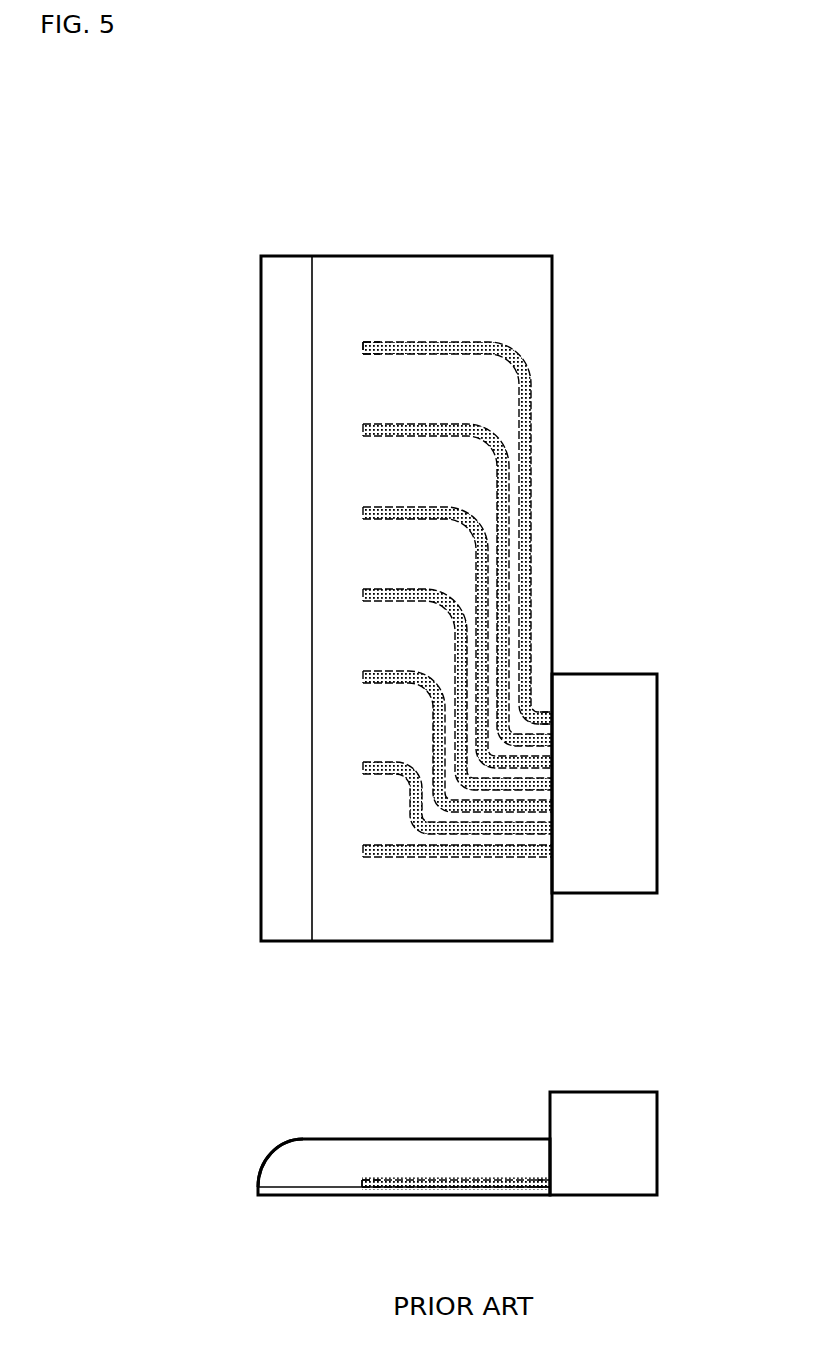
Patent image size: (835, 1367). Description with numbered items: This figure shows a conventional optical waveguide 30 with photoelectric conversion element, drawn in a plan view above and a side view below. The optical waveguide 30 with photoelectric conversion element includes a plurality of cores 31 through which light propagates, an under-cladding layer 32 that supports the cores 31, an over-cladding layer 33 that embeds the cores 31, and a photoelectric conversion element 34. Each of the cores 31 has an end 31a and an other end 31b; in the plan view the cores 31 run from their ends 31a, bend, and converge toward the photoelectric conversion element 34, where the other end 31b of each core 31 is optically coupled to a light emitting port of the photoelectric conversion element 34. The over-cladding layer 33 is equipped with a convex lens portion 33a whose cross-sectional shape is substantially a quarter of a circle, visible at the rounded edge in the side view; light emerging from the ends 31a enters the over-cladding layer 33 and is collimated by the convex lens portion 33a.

The optical waveguide with photoelectric conversion element 30 is at (675, 147).
The core 31 is at (520, 353).
The end of core 31a is at (363, 345).
The other end of core 31b is at (552, 720).
The under-cladding layer 32 is at (463, 1196).
The over-cladding layer 33 is at (342, 1160).
The convex lens portion 33a is at (287, 567).
The photoelectric conversion element 34 is at (626, 782).